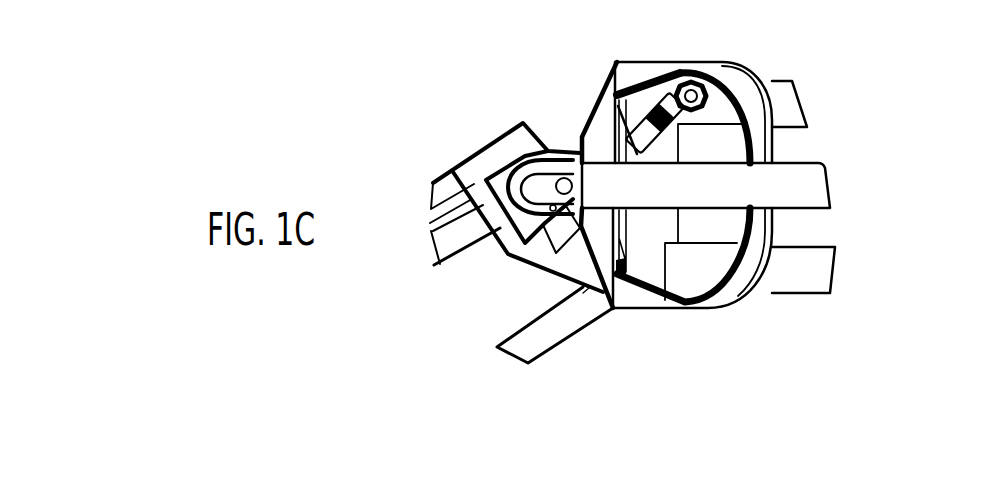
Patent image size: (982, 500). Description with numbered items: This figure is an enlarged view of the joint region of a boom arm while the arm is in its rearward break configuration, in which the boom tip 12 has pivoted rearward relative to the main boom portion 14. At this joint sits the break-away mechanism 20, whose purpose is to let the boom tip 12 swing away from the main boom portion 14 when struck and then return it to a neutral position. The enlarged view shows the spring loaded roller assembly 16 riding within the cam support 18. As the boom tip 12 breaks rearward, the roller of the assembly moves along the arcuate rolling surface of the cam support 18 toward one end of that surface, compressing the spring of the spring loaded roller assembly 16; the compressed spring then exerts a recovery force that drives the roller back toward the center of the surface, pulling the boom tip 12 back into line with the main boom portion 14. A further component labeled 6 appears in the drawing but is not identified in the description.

The pivot knob 6 is at (698, 72).
The boom tip 12 is at (445, 255).
The main boom portion 14 is at (823, 189).
The spring loaded roller assembly 16 is at (645, 126).
The cam support 18 is at (725, 77).
The break-away mechanism 20 is at (864, 69).